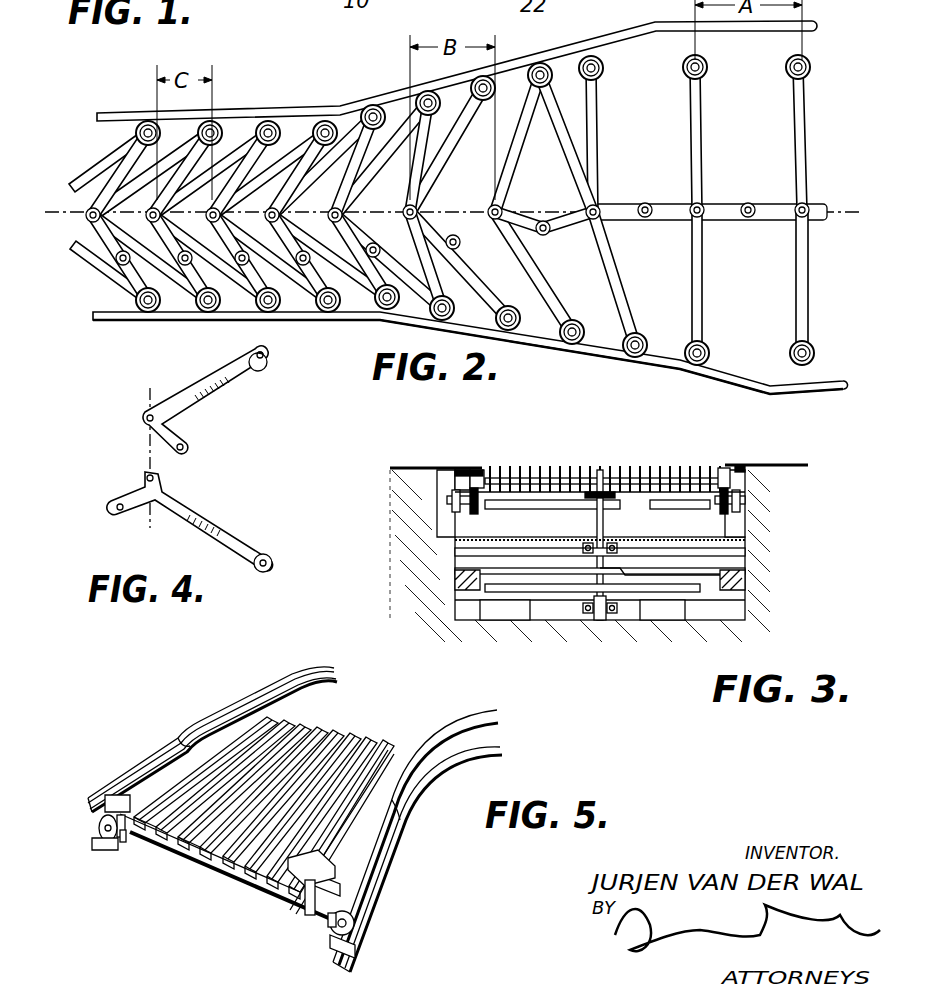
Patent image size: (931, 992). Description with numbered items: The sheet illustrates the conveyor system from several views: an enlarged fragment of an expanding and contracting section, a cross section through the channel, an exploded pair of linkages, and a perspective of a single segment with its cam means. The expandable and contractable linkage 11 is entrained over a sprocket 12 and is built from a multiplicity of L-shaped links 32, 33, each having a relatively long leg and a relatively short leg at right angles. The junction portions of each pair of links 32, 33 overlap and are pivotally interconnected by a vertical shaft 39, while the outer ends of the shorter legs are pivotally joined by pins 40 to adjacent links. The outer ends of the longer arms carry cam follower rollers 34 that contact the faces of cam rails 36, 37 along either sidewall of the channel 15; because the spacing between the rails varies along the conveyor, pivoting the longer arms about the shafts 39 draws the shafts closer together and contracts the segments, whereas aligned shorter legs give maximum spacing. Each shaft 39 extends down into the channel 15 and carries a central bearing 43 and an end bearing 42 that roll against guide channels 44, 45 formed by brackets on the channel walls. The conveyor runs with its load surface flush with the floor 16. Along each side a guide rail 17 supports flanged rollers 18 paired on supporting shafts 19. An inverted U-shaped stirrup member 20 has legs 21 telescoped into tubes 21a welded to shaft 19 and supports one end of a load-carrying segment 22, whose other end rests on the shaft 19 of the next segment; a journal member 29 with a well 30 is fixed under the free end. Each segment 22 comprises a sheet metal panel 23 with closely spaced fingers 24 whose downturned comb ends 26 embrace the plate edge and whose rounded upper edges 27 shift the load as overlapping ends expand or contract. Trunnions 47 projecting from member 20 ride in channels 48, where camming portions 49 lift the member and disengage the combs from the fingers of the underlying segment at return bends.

In FIG. 2, the expandable and contractable linkage 11 is at (812, 116).
In FIG. 3, the sprocket 12 is at (430, 566).
In FIG. 3, the channel 15 is at (488, 622).
In FIG. 3, the floor 16 is at (415, 468).
In FIG. 3, the guide rail 17 is at (440, 530).
In FIG. 5, the guide rail 17 is at (97, 859).
In FIG. 3, the flanged rollers 18 is at (437, 513).
In FIG. 5, the flanged rollers 18 is at (100, 837).
In FIG. 3, the supporting shaft 19 is at (672, 508).
In FIG. 5, the supporting shaft 19 is at (250, 888).
In FIG. 3, the U-shaped stirrup member 20 is at (490, 478).
In FIG. 5, the U-shaped stirrup member 20 is at (312, 865).
In FIG. 3, the legs 21 is at (505, 620).
In FIG. 5, the legs 21 is at (110, 823).
In FIG. 3, the tubes 21a is at (478, 506).
In FIG. 5, the tubes 21a is at (122, 846).
In FIG. 3, the conveyor load-carrying segment 22 is at (660, 462).
In FIG. 5, the conveyor load-carrying segment 22 is at (330, 731).
In FIG. 5, the sheet metal panel 23 is at (306, 823).
In FIG. 3, the fingers 24 is at (635, 466).
In FIG. 5, the fingers 24 is at (378, 741).
In FIG. 5, the comb ends of fingers 26 is at (185, 857).
In FIG. 5, the rounded upper edges 27 is at (160, 839).
In FIG. 3, the journal member 29 is at (596, 500).
In FIG. 3, the well 30 is at (648, 506).
In FIG. 2, the L-shaped link 32 is at (586, 179).
In FIG. 4, the L-shaped link 32 is at (218, 394).
In FIG. 3, the L-shaped link 32 is at (545, 622).
In FIG. 2, the L-shaped link 33 is at (556, 271).
In FIG. 4, the L-shaped link 33 is at (222, 533).
In FIG. 3, the L-shaped link 33 is at (672, 622).
In FIG. 2, the cam follower roller 34 is at (300, 120).
In FIG. 4, the cam follower roller 34 is at (264, 370).
In FIG. 3, the cam follower roller 34 is at (525, 620).
In FIG. 2, the cam rail 36 is at (762, 32).
In FIG. 3, the cam rail 36 is at (470, 590).
In FIG. 2, the cam rail 37 is at (725, 374).
In FIG. 3, the cam rail 37 is at (735, 590).
In FIG. 2, the shaft 39 is at (338, 210).
In FIG. 3, the shaft 39 is at (602, 622).
In FIG. 2, the pin 40 is at (120, 262).
In FIG. 3, the bearing 42 is at (622, 574).
In FIG. 3, the central bearing 43 is at (620, 548).
In FIG. 3, the guide channel 44 is at (575, 592).
In FIG. 3, the guide channel 45 is at (580, 546).
In FIG. 3, the trunnion 47 is at (476, 470).
In FIG. 5, the trunnion 47 is at (110, 795).
In FIG. 3, the channel 48 is at (462, 470).
In FIG. 5, the channel 48 is at (232, 700).
In FIG. 5, the camming portion 49 is at (180, 735).